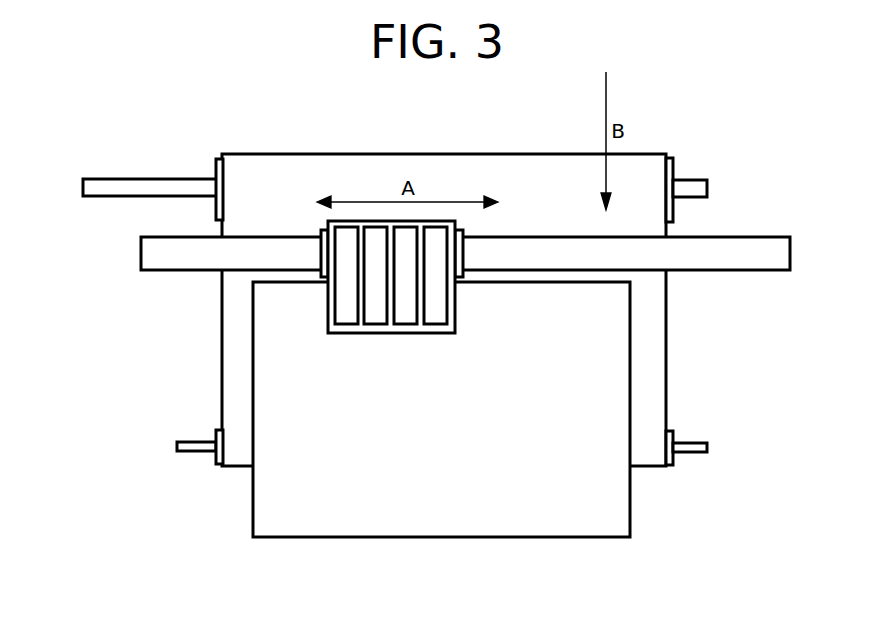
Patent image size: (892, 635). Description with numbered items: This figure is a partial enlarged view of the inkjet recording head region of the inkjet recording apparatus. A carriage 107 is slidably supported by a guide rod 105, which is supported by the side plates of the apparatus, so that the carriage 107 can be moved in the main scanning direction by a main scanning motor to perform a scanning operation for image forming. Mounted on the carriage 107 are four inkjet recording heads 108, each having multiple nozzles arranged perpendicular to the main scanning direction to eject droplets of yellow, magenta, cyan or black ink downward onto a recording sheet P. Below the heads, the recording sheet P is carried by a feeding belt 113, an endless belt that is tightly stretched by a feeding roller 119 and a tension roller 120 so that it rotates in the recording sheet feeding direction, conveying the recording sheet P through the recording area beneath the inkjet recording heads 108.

The feeding belt 113 is at (265, 163).
The guide rod 105 is at (755, 248).
The feeding roller 119 is at (215, 160).
The tension roller 120 is at (213, 435).
The carriage 107 is at (338, 333).
The inkjet recording heads 108 is at (349, 318).
The recording sheet P is at (347, 528).